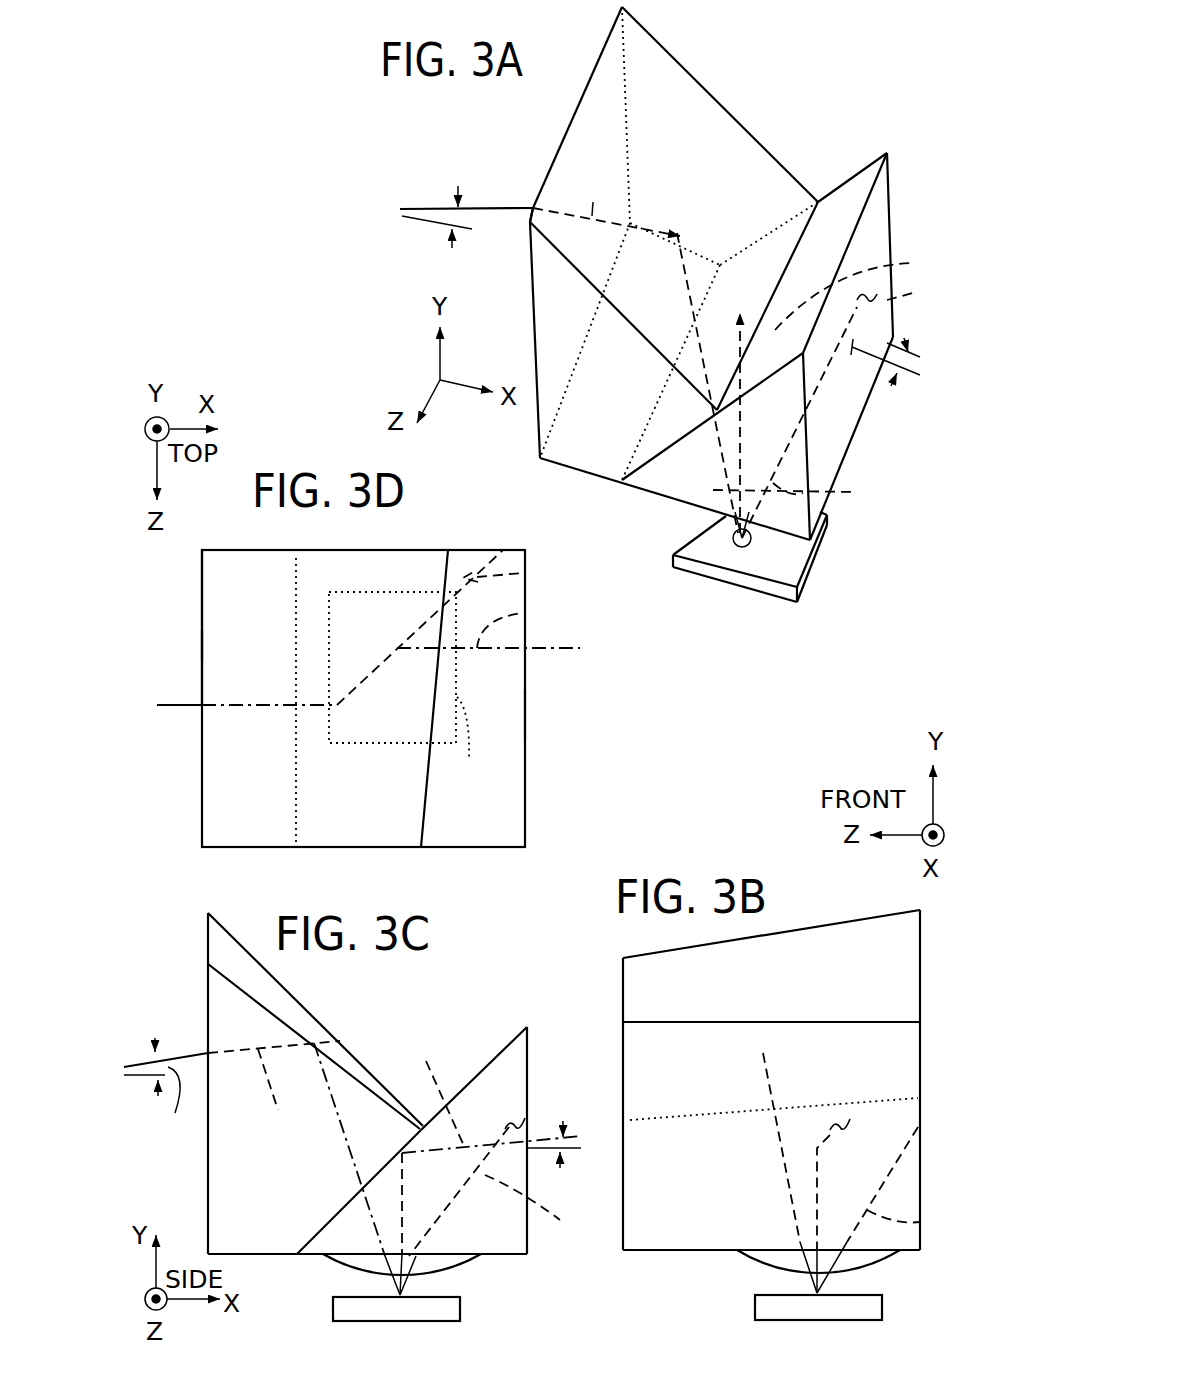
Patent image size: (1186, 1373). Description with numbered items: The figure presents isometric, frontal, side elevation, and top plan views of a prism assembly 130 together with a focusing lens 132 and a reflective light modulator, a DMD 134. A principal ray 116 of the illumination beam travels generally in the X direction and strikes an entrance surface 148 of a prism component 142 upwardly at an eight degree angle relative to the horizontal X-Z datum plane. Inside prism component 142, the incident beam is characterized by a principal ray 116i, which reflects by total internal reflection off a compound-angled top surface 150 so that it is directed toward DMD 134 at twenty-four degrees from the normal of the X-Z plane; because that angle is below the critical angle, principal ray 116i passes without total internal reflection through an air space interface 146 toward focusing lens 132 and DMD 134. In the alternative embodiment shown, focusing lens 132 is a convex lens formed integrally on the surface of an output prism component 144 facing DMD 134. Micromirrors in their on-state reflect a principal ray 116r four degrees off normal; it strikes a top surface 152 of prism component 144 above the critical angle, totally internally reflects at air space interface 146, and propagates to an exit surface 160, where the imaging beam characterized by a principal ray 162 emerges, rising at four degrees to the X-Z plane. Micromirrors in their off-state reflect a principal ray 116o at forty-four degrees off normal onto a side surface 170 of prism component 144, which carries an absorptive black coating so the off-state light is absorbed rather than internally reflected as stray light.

In FIG. 3A, the principal ray 116 is at (430, 203).
In FIG. 3D, the principal ray 116 is at (183, 707).
In FIG. 3C, the principal ray 116 is at (139, 1055).
In FIG. 3A, the principal ray of the incident beam 116i is at (662, 217).
In FIG. 3D, the principal ray of the incident beam 116i is at (367, 670).
In FIG. 3C, the principal ray of the incident beam 116i is at (296, 1148).
In FIG. 3B, the principal ray of the incident beam 116i is at (773, 1088).
In FIG. 3A, the principal ray of the on-state reflected light beam 116r is at (643, 372).
In FIG. 3D, the principal ray of the on-state reflected light beam 116r is at (538, 625).
In FIG. 3C, the principal ray of the on-state reflected light beam 116r is at (433, 1095).
In FIG. 3B, the principal ray of the on-state reflected light beam 116r is at (817, 1180).
In FIG. 3A, the principal ray of the off-state reflected light beam 116o is at (846, 414).
In FIG. 3D, the principal ray of the off-state reflected light beam 116o is at (532, 585).
In FIG. 3C, the principal ray of the off-state reflected light beam 116o is at (502, 1192).
In FIG. 3B, the principal ray of the off-state reflected light beam 116o is at (928, 1231).
In FIG. 3A, the prism assembly 130 is at (788, 107).
In FIG. 3D, the prism assembly 130 is at (337, 848).
In FIG. 3C, the prism assembly 130 is at (442, 1000).
In FIG. 3B, the prism assembly 130 is at (680, 1263).
In FIG. 3C, the focusing lens 132 is at (344, 1269).
In FIG. 3B, the focusing lens 132 is at (767, 1267).
In FIG. 3A, the DMD 134 is at (730, 578).
In FIG. 3D, the DMD 134 is at (412, 695).
In FIG. 3C, the DMD 134 is at (452, 1308).
In FIG. 3B, the DMD 134 is at (872, 1305).
In FIG. 3A, the prism component 142 is at (565, 132).
In FIG. 3D, the prism component 142 is at (200, 617).
In FIG. 3B, the prism component 142 is at (848, 915).
In FIG. 3A, the output prism component 144 is at (896, 204).
In FIG. 3D, the output prism component 144 is at (529, 776).
In FIG. 3C, the output prism component 144 is at (516, 1256).
In FIG. 3B, the output prism component 144 is at (912, 1253).
In FIG. 3A, the air space interface 146 is at (800, 244).
In FIG. 3C, the air space interface 146 is at (337, 1213).
In FIG. 3B, the air space interface 146 is at (707, 1110).
In FIG. 3A, the entrance surface 148 is at (580, 93).
In FIG. 3D, the entrance surface 148 is at (202, 645).
In FIG. 3A, the top surface 150 is at (693, 107).
In FIG. 3C, the top surface 150 is at (297, 1003).
In FIG. 3B, the top surface 150 is at (805, 977).
In FIG. 3A, the top surface 152 is at (847, 188).
In FIG. 3C, the top surface 152 is at (474, 1072).
In FIG. 3A, the exit surface 160 is at (843, 423).
In FIG. 3D, the exit surface 160 is at (525, 720).
In FIG. 3B, the exit surface 160 is at (763, 1053).
In FIG. 3A, the principal ray of the imaging beam 162 is at (917, 343).
In FIG. 3D, the principal ray of the imaging beam 162 is at (550, 650).
In FIG. 3C, the principal ray of the imaging beam 162 is at (549, 1130).
In FIG. 3B, the principal ray of the imaging beam 162 is at (864, 1182).
In FIG. 3A, the side surface 170 is at (893, 187).
In FIG. 3D, the side surface 170 is at (473, 548).
In FIG. 3B, the side surface 170 is at (922, 1193).